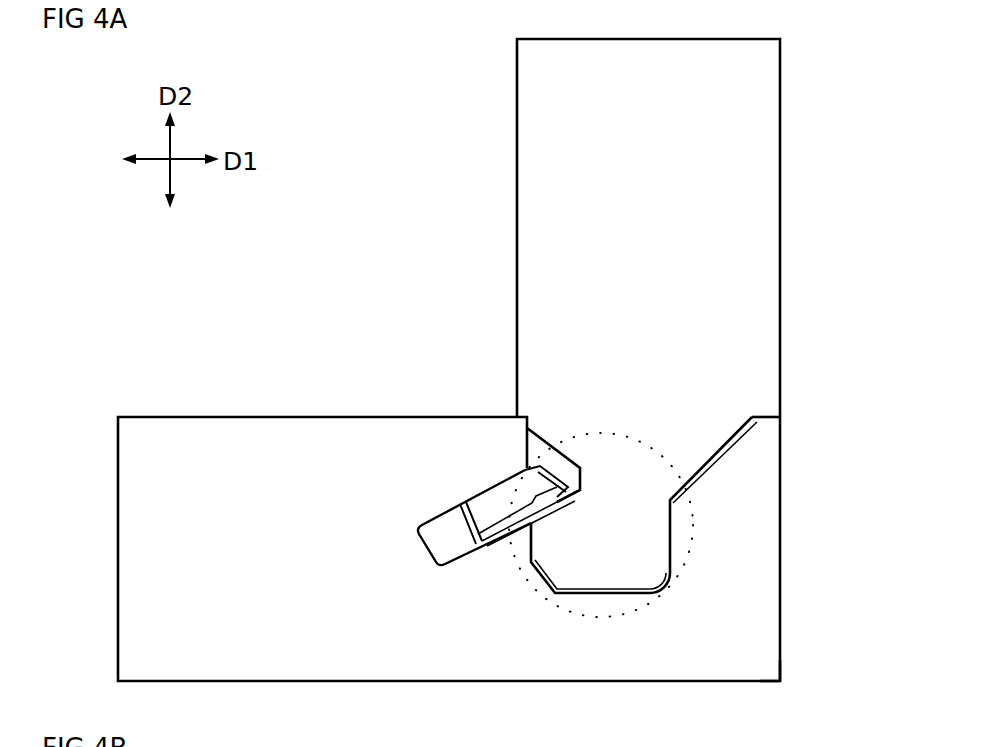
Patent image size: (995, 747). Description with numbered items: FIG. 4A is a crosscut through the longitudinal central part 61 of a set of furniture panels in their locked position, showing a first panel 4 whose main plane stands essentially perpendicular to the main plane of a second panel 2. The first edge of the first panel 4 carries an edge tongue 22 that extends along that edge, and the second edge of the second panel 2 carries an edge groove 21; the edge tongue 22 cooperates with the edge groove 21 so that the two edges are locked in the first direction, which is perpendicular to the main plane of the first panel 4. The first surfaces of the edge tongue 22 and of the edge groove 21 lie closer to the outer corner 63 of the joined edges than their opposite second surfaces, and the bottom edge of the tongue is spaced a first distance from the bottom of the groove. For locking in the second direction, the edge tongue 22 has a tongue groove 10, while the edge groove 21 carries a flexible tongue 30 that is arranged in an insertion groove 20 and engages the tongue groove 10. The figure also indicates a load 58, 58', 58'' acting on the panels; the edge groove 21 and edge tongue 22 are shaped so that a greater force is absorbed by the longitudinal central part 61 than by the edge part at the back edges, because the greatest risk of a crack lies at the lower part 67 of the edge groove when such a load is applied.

The second panel 2 is at (270, 453).
The first panel 4 is at (747, 200).
The tongue groove 10 is at (547, 450).
The insertion groove 20 is at (438, 542).
The edge groove 21 is at (530, 585).
The edge tongue 22 is at (615, 513).
The flexible tongue 30 is at (523, 472).
The load 58 is at (81, 510).
The load 58' is at (200, 377).
The load 58'' is at (819, 47).
The longitudinal central part 61 is at (400, 303).
The outer corner 63 is at (780, 681).
The lower part of the edge groove 67 is at (662, 588).